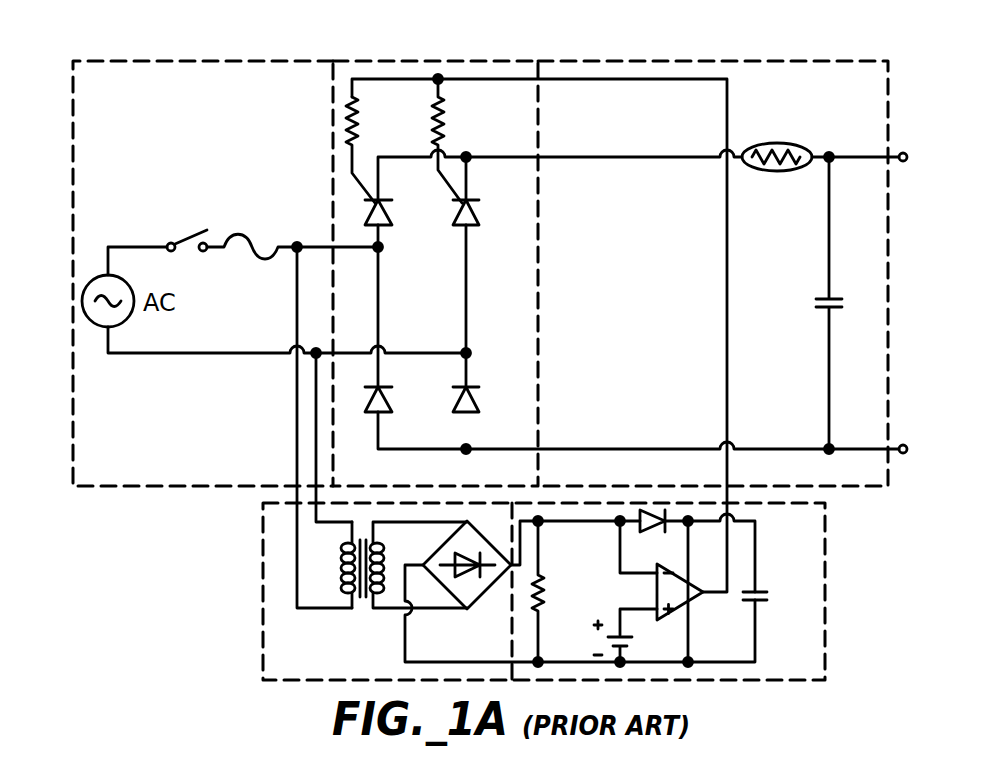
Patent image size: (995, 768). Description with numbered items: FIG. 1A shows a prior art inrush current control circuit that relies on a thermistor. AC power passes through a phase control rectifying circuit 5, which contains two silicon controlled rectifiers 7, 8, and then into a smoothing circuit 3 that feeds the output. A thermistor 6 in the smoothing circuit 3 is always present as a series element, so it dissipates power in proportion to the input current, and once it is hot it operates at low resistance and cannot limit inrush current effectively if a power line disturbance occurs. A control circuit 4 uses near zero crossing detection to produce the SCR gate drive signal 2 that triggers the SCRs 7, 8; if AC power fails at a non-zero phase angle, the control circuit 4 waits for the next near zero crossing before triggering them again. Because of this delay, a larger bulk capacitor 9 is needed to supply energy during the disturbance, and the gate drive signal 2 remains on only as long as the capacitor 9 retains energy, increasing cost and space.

The SCR gate drive signal 2 is at (592, 82).
The smoothing circuit 3 is at (722, 254).
The control circuit 4 is at (567, 591).
The phase control rectifying circuit 5 is at (616, 306).
The thermistor 6 is at (778, 143).
The silicon controlled rectifier 7 is at (388, 214).
The silicon controlled rectifier 8 is at (478, 214).
The bulk capacitor 9 is at (768, 590).